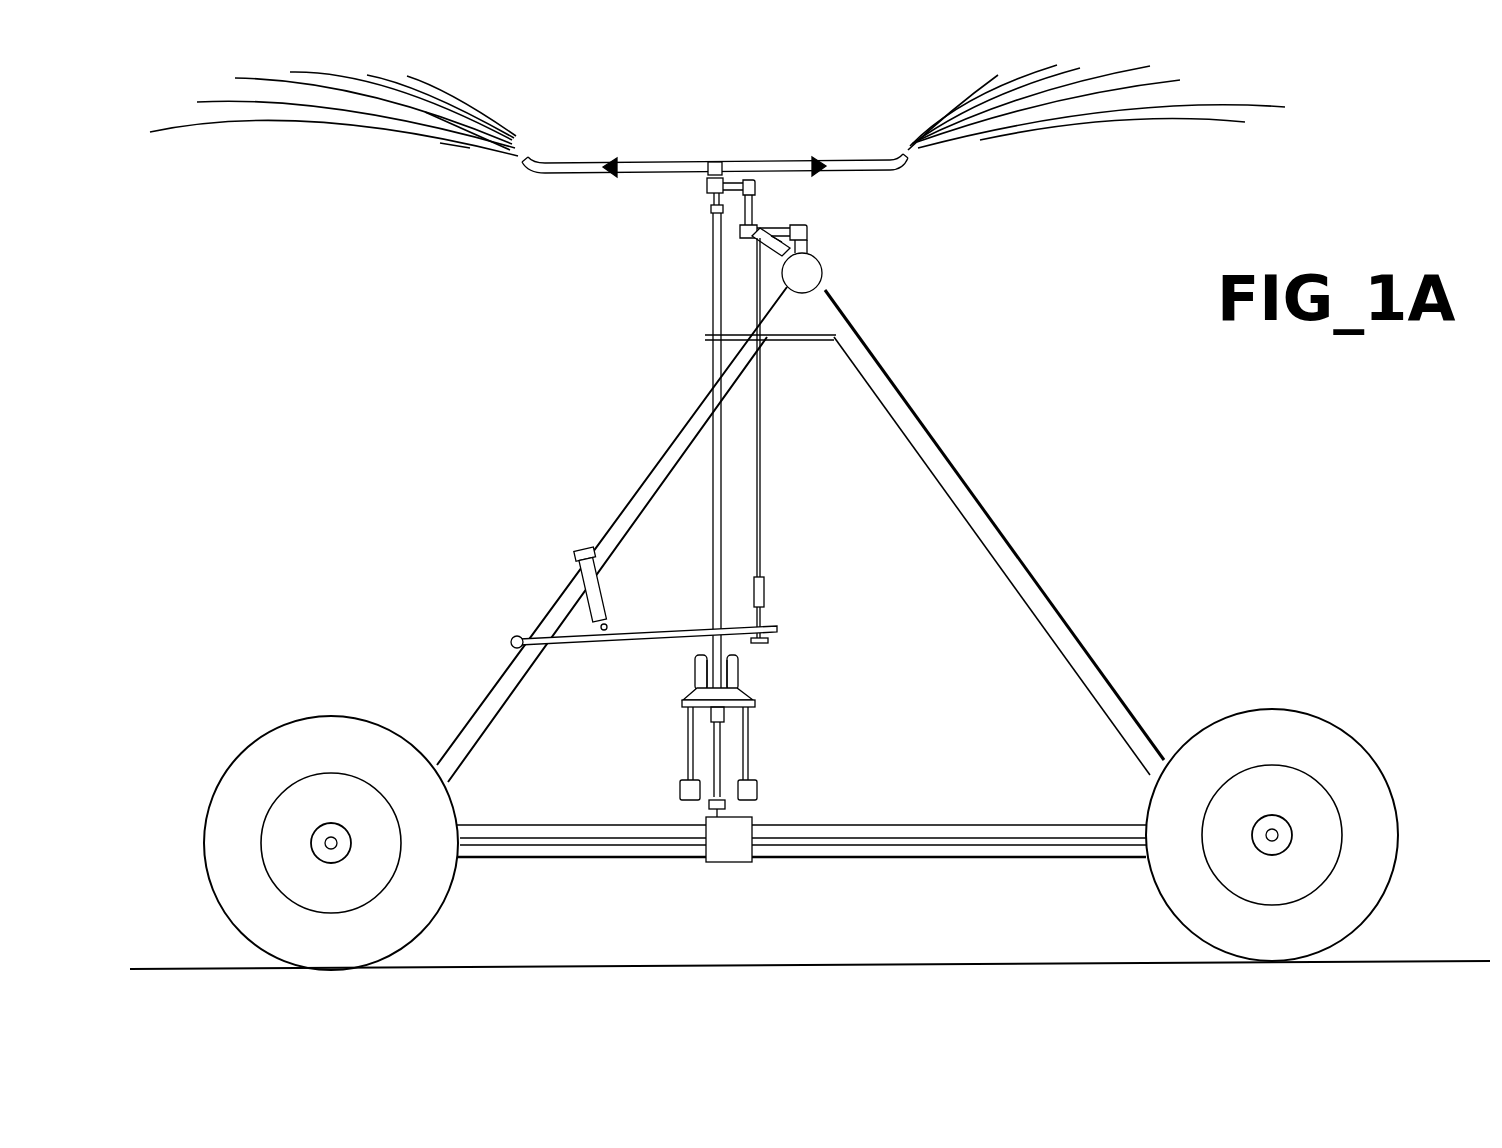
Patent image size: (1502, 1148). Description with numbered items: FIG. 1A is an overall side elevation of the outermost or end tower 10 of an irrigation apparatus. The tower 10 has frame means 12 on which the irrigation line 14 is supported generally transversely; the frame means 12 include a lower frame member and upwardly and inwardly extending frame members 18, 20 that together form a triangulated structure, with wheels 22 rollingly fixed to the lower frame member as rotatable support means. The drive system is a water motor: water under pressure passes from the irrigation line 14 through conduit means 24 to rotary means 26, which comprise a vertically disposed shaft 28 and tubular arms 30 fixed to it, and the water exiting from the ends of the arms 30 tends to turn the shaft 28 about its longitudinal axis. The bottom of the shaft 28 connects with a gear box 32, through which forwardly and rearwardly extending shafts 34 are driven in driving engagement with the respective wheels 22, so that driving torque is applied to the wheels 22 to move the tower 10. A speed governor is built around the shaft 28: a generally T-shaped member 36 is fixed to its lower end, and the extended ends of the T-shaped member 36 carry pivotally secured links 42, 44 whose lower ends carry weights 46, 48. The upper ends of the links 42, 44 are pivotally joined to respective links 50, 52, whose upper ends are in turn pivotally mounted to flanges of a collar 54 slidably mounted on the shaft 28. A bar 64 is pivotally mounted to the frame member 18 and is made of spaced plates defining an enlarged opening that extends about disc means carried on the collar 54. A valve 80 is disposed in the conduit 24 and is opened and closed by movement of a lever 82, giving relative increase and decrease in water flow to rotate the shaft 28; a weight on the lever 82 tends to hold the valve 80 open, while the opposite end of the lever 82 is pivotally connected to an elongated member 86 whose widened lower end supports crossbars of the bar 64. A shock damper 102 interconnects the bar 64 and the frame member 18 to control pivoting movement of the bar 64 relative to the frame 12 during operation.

The tower 10 is at (1150, 603).
The frame means 12 is at (800, 534).
The irrigation line 14 is at (826, 265).
The frame member 18 is at (643, 476).
The frame member 20 is at (1022, 558).
The wheels 22 is at (272, 732).
The conduit means 24 is at (792, 222).
The rotary means 26 is at (712, 293).
The shaft 28 is at (705, 338).
The tubular arms 30 is at (651, 162).
The gear box 32 is at (743, 853).
The shafts 34 is at (583, 848).
The T-shaped member 36 is at (757, 702).
The link 42 is at (687, 750).
The link 44 is at (752, 748).
The weight 46 is at (680, 792).
The weight 48 is at (758, 792).
The link 50 is at (695, 678).
The link 52 is at (740, 678).
The collar 54 is at (710, 648).
The bar 64 is at (578, 647).
The valve 80 is at (777, 255).
The lever 82 is at (767, 228).
The elongated member 86 is at (764, 470).
The shock damper 102 is at (607, 580).